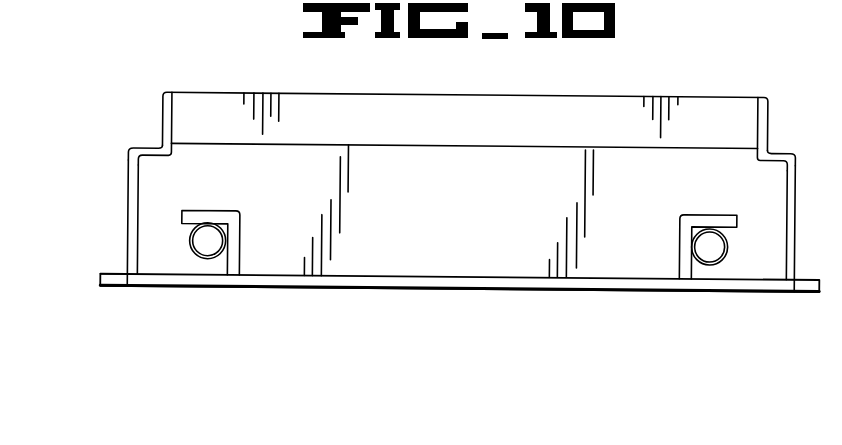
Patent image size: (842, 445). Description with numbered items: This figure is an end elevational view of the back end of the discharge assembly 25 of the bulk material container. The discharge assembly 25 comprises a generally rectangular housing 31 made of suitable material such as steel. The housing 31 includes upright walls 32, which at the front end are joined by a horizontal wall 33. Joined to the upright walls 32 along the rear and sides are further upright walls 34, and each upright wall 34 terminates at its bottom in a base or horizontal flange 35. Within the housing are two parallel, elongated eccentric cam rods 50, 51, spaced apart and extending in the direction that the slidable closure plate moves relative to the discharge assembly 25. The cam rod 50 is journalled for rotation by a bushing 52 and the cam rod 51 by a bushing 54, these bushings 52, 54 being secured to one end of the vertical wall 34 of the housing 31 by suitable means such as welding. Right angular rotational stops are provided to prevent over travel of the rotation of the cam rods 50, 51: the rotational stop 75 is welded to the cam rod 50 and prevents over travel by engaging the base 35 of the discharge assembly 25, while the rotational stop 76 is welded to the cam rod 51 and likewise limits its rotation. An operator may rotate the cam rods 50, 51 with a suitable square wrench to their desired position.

The discharge assembly 25 is at (592, 305).
The housing 31 is at (101, 286).
The upright walls 32 is at (161, 103).
The horizontal wall 33 is at (146, 143).
The upright walls 34 is at (127, 205).
The base or horizontal flange 35 is at (117, 287).
The cam rod 50 is at (212, 250).
The cam rod 51 is at (707, 253).
The bushing 52 is at (190, 248).
The bushing 54 is at (728, 247).
The rotational stop 75 is at (700, 215).
The rotational stop 76 is at (207, 210).